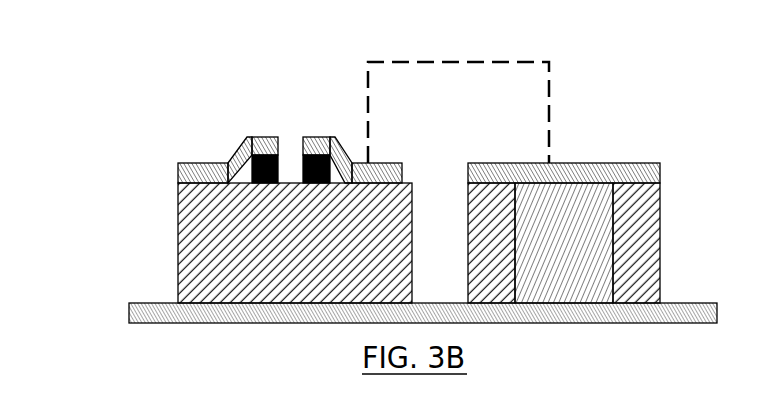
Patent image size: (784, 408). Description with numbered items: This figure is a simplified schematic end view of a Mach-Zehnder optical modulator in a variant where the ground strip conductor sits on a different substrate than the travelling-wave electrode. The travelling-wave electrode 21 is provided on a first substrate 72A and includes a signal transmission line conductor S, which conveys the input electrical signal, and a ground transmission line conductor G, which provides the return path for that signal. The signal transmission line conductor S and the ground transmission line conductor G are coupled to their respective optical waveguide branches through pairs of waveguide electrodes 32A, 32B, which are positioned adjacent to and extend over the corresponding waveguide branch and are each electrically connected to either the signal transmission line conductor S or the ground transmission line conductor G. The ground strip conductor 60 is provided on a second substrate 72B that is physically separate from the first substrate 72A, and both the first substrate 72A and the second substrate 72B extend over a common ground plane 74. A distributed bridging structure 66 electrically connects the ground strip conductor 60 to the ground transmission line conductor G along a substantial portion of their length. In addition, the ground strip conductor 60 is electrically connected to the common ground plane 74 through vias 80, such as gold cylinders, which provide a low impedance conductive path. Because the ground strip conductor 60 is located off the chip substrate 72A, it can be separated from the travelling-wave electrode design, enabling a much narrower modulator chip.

The travelling-wave electrode 21 is at (284, 50).
The waveguide electrode 32A is at (267, 137).
The waveguide electrode 32B is at (320, 137).
The signal transmission line conductor S is at (200, 163).
The ground transmission line conductor G is at (363, 163).
The distributed bridging structure 66 is at (488, 62).
The ground strip conductor 60 is at (608, 164).
The first substrate 72A is at (187, 233).
The second substrate 72B is at (655, 238).
The vias 80 is at (574, 288).
The common ground plane 74 is at (700, 324).